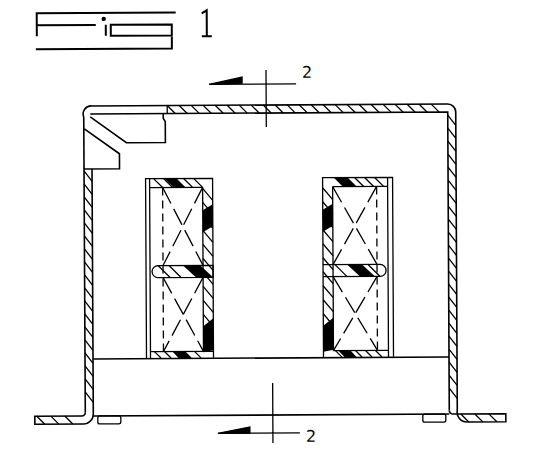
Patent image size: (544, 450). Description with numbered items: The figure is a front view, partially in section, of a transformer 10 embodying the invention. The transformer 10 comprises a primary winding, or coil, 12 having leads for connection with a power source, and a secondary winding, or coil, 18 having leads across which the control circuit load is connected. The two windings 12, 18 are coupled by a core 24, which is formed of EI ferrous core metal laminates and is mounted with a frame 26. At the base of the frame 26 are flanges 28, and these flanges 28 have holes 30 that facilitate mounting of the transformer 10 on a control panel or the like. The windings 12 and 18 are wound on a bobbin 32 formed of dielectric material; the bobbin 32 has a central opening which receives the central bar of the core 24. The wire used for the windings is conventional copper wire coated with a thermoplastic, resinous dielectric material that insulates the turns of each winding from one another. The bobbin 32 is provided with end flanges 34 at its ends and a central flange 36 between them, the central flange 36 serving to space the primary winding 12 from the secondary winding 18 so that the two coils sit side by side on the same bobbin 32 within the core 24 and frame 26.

The transformer 10 is at (407, 72).
The primary winding 12 is at (378, 213).
The secondary winding 18 is at (378, 302).
The core 24 is at (293, 264).
The frame 26 is at (83, 160).
The flanges 28 is at (40, 415).
The holes 30 is at (472, 412).
The bobbin 32 is at (214, 213).
The end flanges 34 is at (172, 182).
The central flange 36 is at (172, 260).